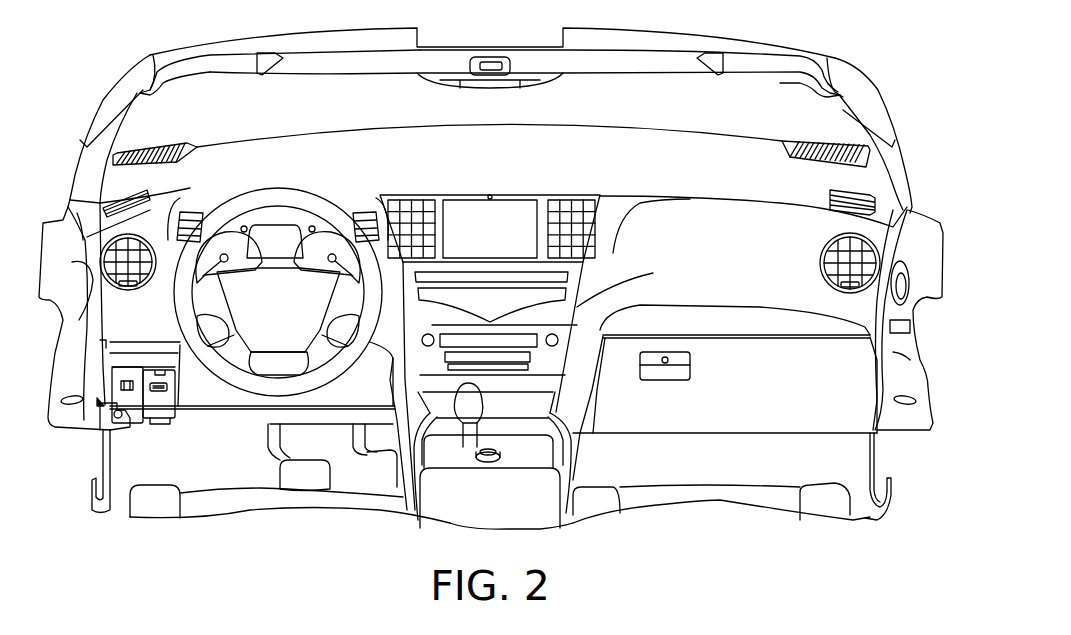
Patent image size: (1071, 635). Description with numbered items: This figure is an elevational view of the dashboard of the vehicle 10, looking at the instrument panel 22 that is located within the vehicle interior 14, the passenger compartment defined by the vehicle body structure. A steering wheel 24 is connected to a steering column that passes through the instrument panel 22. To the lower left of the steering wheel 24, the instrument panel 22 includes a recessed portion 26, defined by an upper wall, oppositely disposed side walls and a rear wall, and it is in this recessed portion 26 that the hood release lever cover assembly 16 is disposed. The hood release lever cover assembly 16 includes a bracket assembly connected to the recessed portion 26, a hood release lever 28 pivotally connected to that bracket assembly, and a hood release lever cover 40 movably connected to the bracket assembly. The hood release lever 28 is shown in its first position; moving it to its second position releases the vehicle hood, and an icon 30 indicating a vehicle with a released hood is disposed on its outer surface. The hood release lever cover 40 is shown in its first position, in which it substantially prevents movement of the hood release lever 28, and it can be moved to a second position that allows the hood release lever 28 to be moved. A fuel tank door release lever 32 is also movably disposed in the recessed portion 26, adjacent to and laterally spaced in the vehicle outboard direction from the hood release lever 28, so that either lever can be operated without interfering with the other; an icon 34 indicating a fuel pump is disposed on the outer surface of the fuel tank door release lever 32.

The vehicle 10 is at (735, 34).
The vehicle interior 14 is at (676, 160).
The instrument panel 22 is at (297, 160).
The steering wheel 24 is at (233, 198).
The recessed portion 26 is at (127, 378).
The hood release lever 28 is at (160, 400).
The icon 30 is at (158, 377).
The hood release lever cover assembly 16 is at (103, 407).
The fuel tank door release lever 32 is at (123, 395).
The icon 34 is at (100, 343).
The hood release lever cover 40 is at (148, 421).